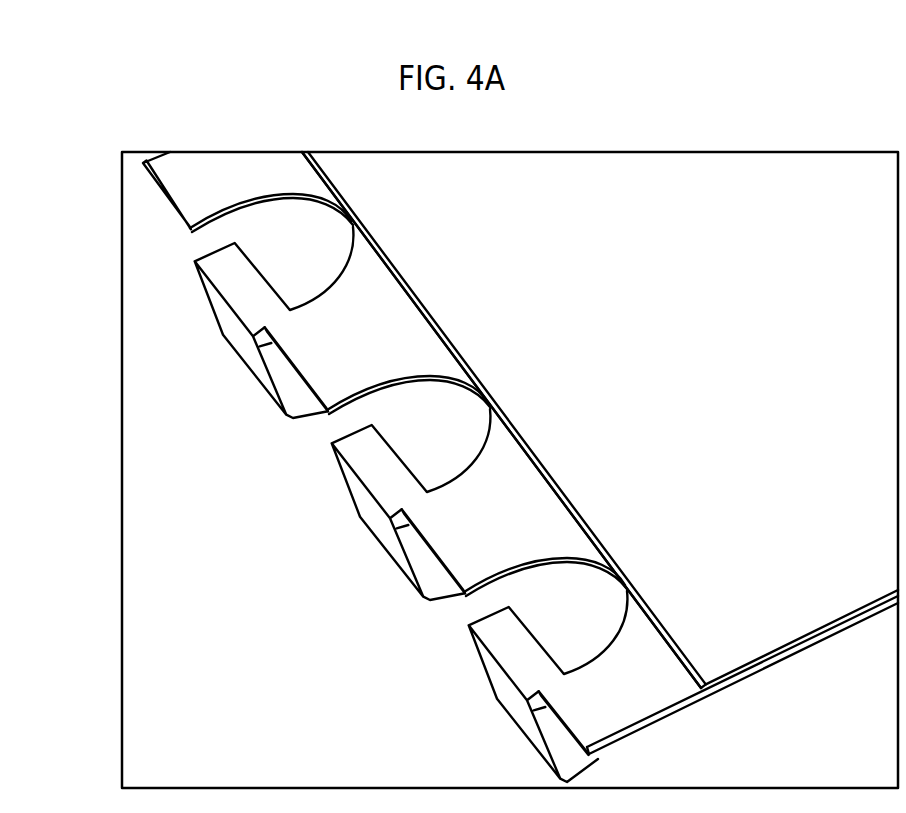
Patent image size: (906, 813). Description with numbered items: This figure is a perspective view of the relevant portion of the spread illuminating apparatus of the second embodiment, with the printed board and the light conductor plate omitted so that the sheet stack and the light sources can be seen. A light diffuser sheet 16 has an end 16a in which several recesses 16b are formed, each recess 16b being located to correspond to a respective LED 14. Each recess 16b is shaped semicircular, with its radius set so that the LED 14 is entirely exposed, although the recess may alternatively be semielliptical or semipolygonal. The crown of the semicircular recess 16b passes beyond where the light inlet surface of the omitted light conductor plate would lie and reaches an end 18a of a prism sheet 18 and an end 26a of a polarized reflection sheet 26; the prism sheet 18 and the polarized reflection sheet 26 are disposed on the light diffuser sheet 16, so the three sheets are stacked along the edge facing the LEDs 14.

The LED 14 is at (365, 510).
The light diffuser sheet 16 is at (327, 355).
The end of the light diffuser sheet 16a is at (415, 566).
The recess 16b is at (413, 402).
The prism sheet 18 is at (455, 463).
The end of the prism sheet 18a is at (672, 687).
The polarized reflection sheet 26 is at (600, 453).
The end of the polarized reflection sheet 26a is at (560, 528).